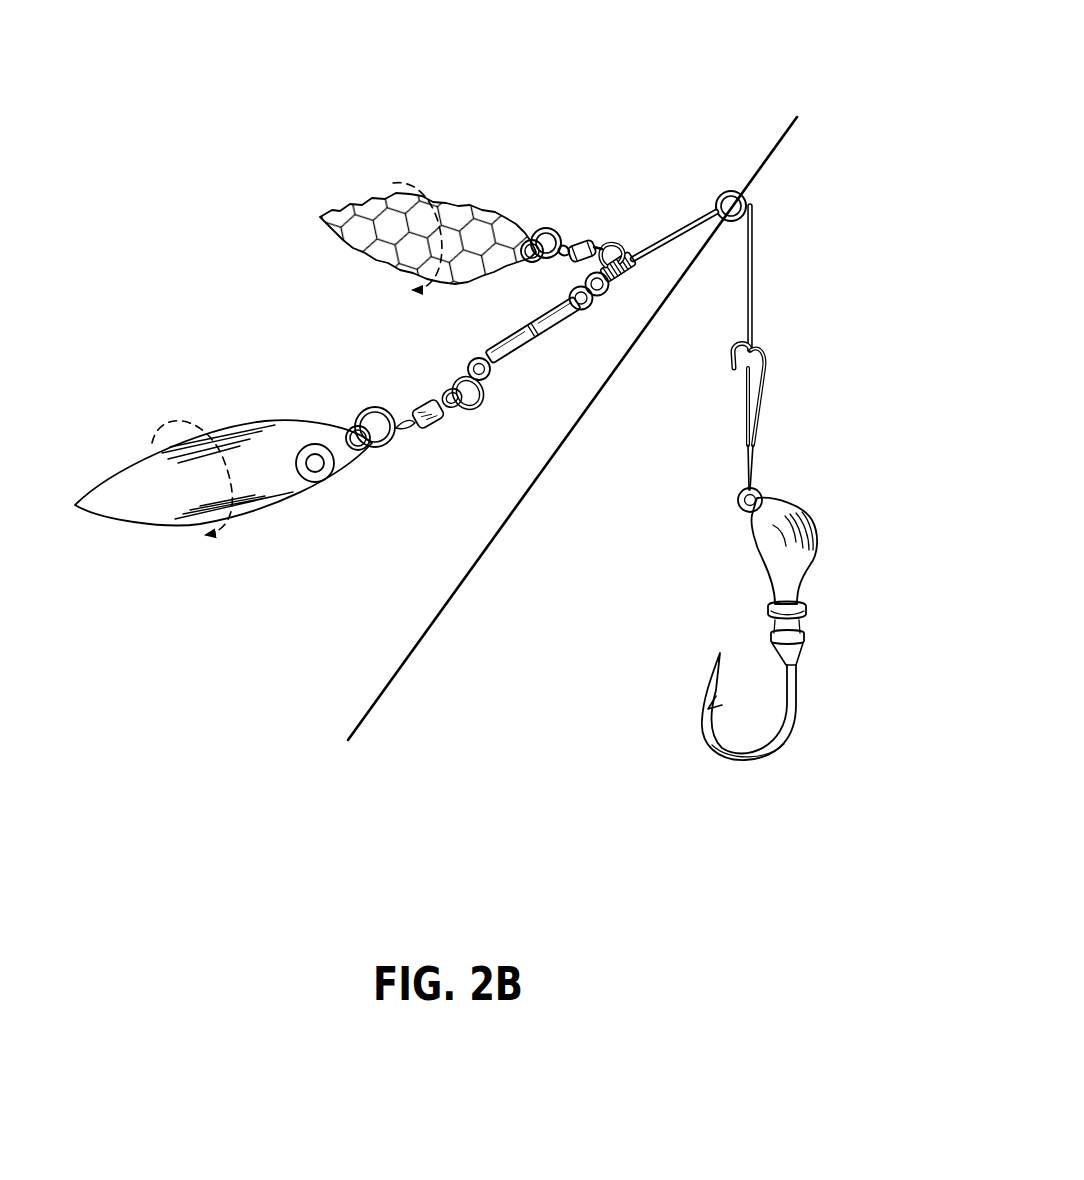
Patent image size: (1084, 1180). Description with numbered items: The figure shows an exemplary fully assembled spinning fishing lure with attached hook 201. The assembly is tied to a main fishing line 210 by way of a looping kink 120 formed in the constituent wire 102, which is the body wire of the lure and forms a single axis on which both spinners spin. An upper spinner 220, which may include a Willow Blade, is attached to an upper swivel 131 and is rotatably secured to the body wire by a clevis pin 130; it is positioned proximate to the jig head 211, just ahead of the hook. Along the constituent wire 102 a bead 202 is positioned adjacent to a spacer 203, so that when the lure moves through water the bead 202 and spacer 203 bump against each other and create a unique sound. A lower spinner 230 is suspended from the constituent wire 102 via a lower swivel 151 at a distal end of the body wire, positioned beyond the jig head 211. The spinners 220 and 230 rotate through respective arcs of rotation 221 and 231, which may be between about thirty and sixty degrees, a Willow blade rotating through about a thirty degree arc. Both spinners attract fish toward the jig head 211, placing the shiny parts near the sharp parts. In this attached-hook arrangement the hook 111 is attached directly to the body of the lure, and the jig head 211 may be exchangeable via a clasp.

The spinning fishing lure with attached hook 201 is at (620, 90).
The main fishing line 210 is at (787, 120).
The looping kink 120 is at (762, 208).
The constituent wire 102 is at (676, 240).
The clevis pin 130 is at (622, 242).
The upper swivel 131 is at (580, 238).
The upper spinner 220 is at (500, 206).
The arc of rotation 221 is at (396, 178).
The bead 202 is at (470, 360).
The spacer 203 is at (540, 340).
The lower swivel 151 is at (425, 436).
The lower spinner 230 is at (264, 410).
The arc of rotation 231 is at (217, 550).
The jig head 211 is at (796, 507).
The hook 111 is at (820, 640).